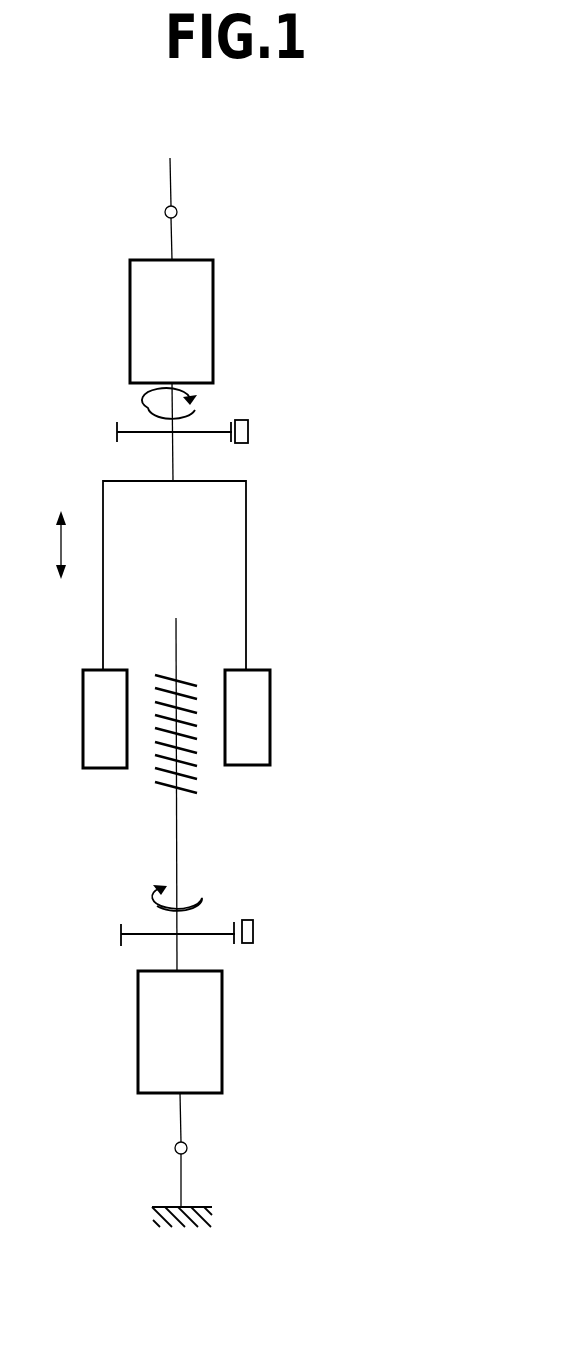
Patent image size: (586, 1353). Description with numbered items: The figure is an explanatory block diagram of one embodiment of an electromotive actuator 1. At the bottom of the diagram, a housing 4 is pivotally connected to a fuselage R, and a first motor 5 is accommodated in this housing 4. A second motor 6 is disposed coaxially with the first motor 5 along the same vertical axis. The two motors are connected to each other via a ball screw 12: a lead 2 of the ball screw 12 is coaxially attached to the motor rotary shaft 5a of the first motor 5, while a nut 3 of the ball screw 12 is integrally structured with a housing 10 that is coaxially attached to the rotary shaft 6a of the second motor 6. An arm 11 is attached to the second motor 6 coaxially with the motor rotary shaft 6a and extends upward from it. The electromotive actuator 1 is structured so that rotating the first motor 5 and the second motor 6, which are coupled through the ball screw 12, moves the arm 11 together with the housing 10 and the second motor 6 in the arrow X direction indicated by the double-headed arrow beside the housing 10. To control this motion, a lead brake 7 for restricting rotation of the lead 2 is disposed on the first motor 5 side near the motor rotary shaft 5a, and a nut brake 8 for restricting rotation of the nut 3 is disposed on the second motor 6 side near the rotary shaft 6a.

The electromotive actuator 1 is at (412, 785).
The lead 2 is at (175, 830).
The nut 3 is at (83, 699).
The housing 4 is at (181, 1115).
The first motor 5 is at (138, 1033).
The motor rotary shaft 5a is at (179, 962).
The second motor 6 is at (130, 328).
The rotary shaft 6a is at (173, 462).
The lead brake 7 is at (255, 926).
The nut brake 8 is at (249, 430).
The housing 10 is at (247, 586).
The arm 11 is at (170, 244).
The ball screw 12 is at (290, 683).
The fuselage R is at (193, 1218).
The arrow X direction X is at (46, 545).